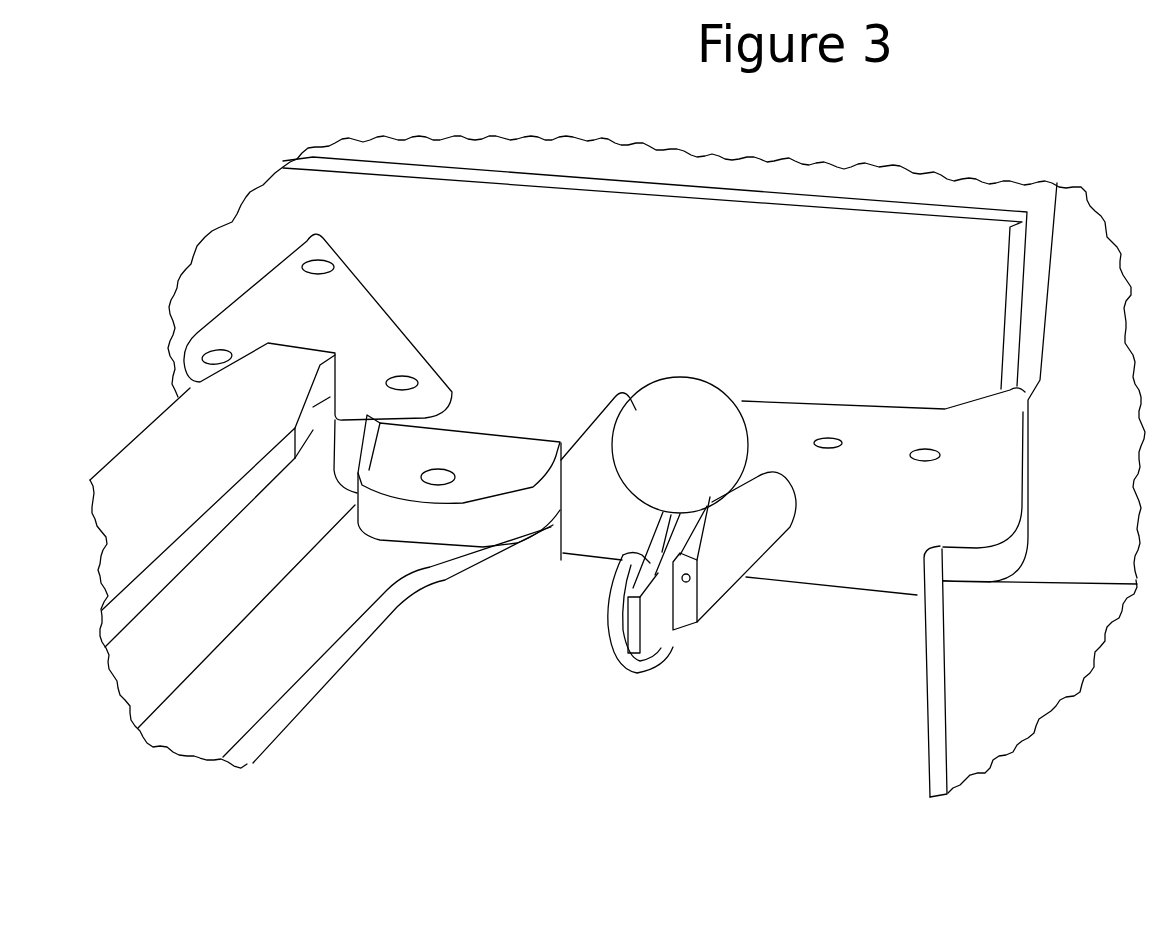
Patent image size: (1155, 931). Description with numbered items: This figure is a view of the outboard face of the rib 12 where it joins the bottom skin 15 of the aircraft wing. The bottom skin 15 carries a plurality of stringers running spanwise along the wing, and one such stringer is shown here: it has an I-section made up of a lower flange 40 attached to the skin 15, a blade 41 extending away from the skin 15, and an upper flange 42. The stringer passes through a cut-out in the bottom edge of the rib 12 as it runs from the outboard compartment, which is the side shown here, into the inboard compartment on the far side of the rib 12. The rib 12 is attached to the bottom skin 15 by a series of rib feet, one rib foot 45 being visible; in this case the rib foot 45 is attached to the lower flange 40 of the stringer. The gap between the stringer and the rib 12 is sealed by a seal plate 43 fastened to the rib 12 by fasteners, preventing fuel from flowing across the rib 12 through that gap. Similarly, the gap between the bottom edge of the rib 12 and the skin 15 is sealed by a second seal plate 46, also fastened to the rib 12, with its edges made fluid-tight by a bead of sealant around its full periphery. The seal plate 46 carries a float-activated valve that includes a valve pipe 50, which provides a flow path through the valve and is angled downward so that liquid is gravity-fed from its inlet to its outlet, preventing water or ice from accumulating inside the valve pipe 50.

The rib 12 is at (980, 303).
The bottom skin 15 is at (712, 757).
The lower flange 40 is at (345, 650).
The blade 41 is at (258, 527).
The upper flange 42 is at (163, 565).
The seal plate 43 is at (352, 303).
The rib foot 45 is at (467, 515).
The seal plate 46 is at (818, 552).
The valve pipe 50 is at (745, 535).